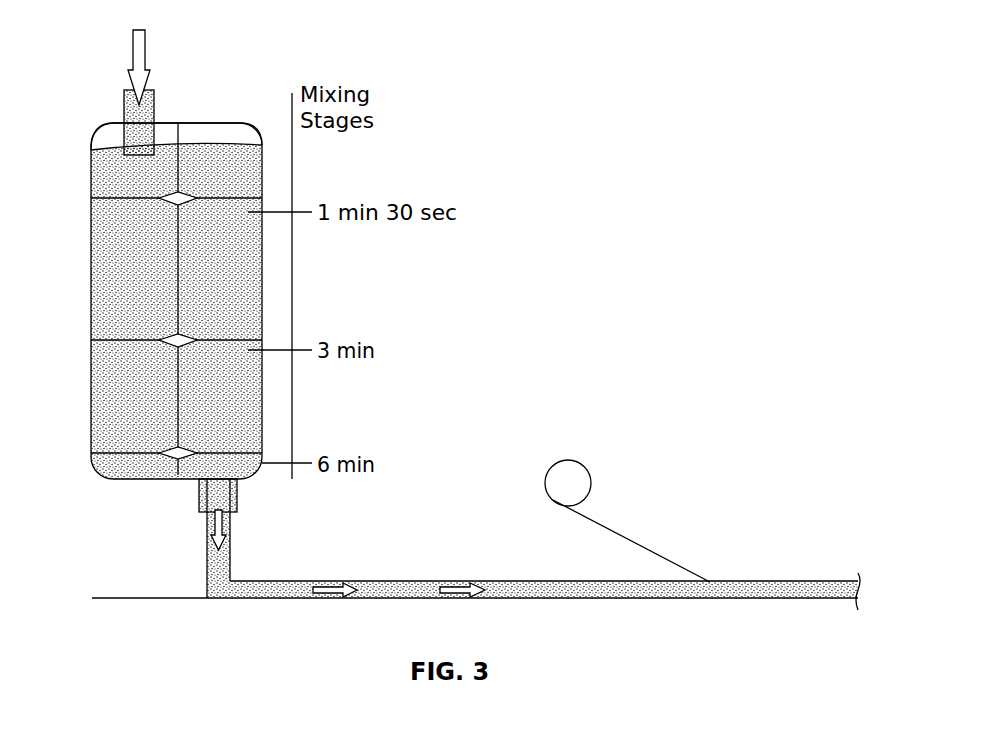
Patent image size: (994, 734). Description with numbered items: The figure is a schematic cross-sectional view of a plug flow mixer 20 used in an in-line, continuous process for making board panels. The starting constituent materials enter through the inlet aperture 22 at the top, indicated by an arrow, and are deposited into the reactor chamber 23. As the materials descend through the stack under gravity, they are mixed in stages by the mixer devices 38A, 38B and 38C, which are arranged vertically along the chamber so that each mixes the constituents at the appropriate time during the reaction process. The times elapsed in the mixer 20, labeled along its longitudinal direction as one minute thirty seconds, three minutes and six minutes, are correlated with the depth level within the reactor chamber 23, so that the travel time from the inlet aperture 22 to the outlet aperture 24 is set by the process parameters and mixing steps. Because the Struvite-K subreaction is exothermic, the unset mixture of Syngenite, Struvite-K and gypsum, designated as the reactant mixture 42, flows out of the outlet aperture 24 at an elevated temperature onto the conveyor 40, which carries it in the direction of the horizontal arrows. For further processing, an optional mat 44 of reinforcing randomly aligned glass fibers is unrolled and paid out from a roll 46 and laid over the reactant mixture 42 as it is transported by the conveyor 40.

The plug flow mixer 20 is at (78, 247).
The inlet aperture 22 is at (124, 98).
The reactor chamber 23 is at (108, 137).
The outlet aperture 24 is at (200, 497).
The mixer device 38A is at (125, 195).
The mixer device 38B is at (120, 341).
The mixer device 38C is at (118, 452).
The conveyor 40 is at (150, 600).
The reactant mixture 42 is at (232, 562).
The mat 44 is at (650, 552).
The roll 46 is at (570, 461).